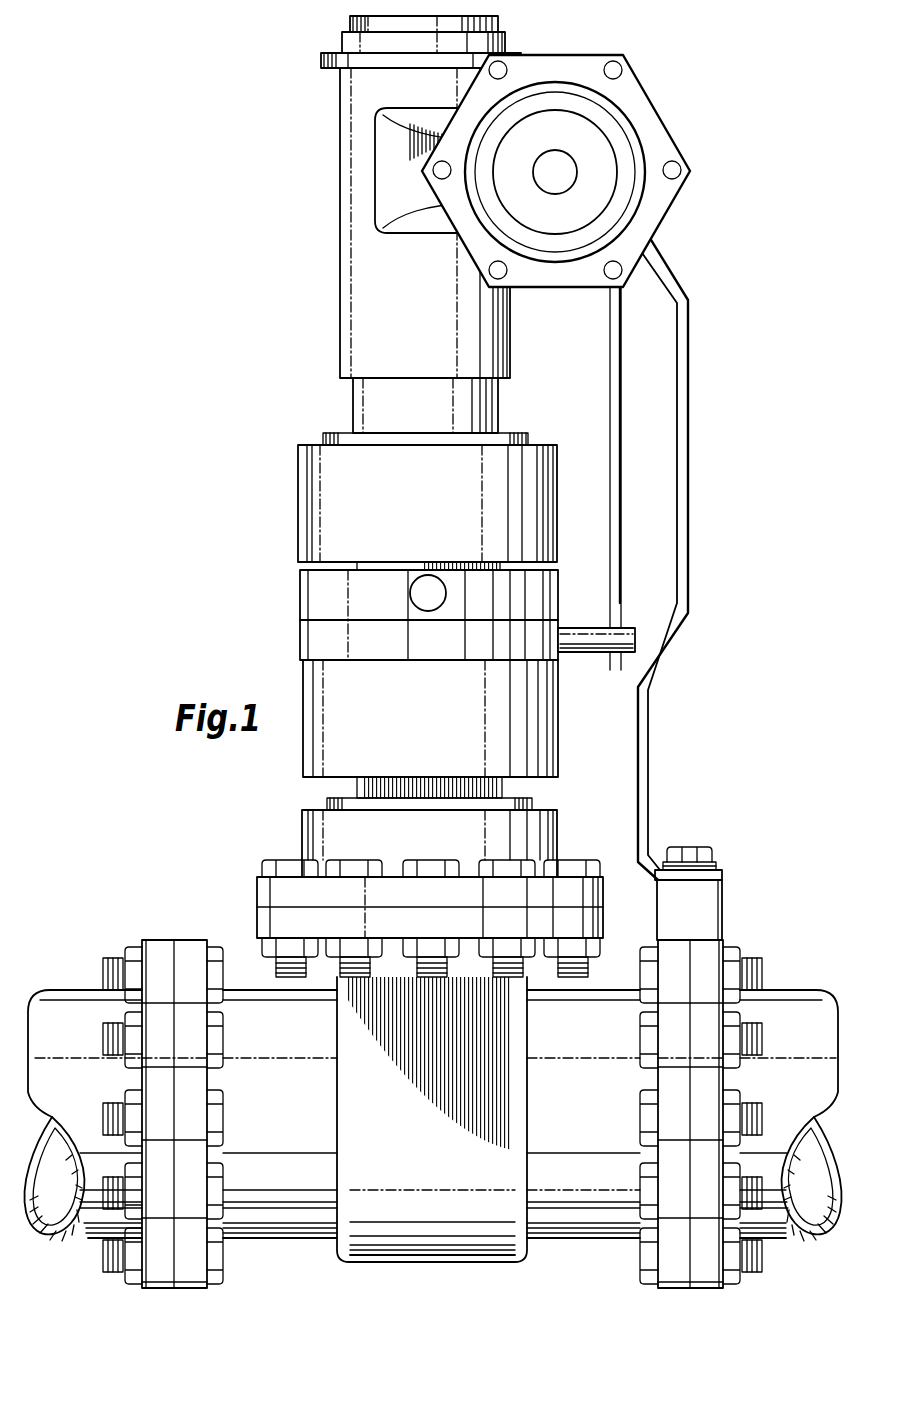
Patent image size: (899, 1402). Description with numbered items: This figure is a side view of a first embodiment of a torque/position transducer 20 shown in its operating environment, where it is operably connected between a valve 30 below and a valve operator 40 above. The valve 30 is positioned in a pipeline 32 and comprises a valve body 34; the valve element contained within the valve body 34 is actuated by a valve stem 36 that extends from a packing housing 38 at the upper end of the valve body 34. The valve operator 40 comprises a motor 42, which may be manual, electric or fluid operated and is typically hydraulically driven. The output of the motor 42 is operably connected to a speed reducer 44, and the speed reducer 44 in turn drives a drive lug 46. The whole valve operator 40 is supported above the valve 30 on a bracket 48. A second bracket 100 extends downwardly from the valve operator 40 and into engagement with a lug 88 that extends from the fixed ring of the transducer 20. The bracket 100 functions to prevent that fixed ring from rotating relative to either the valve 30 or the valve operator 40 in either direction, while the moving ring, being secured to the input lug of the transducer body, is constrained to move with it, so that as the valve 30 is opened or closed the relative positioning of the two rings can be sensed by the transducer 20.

The torque/position transducer 20 is at (292, 613).
The valve 30 is at (292, 843).
The pipeline 32 is at (163, 930).
The valve body 34 is at (290, 1120).
The valve stem 36 is at (357, 788).
The packing housing 38 is at (542, 835).
The valve operator 40 is at (330, 249).
The motor 42 is at (625, 106).
The speed reducer 44 is at (357, 151).
The drive lug 46 is at (298, 508).
The bracket 48 is at (692, 434).
The lug 88 is at (583, 653).
The bracket 100 is at (610, 392).